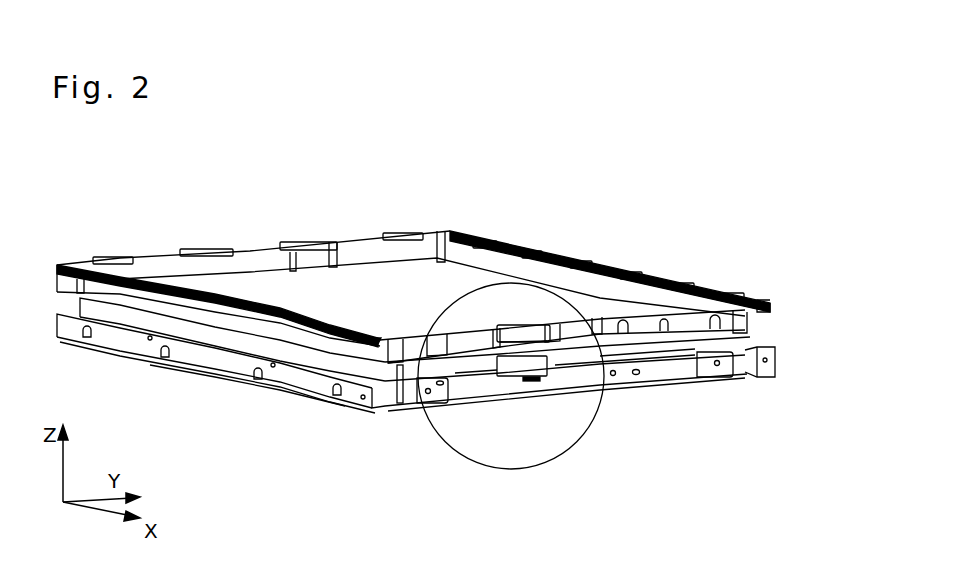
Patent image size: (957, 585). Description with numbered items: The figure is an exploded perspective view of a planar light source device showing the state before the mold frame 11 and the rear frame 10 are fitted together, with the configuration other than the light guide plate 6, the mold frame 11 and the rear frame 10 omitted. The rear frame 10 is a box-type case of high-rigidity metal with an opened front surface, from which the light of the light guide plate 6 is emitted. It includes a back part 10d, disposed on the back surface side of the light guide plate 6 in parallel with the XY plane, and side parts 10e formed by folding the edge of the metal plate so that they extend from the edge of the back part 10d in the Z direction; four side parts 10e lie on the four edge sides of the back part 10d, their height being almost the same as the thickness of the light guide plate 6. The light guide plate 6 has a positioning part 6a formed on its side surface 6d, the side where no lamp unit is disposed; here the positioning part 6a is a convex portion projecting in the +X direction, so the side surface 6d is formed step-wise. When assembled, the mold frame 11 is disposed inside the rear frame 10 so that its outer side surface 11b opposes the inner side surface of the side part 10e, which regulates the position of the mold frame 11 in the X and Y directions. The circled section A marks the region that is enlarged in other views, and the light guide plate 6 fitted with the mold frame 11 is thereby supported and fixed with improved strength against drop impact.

The mold frame 11 is at (413, 288).
The outer side surface 11b is at (512, 338).
The light guide plate 6 is at (435, 403).
The positioning part 6a is at (515, 368).
The side surface 6d is at (400, 376).
The rear frame 10 is at (453, 387).
The back part 10d is at (777, 362).
The side parts 10e is at (634, 380).
The section A is at (592, 428).